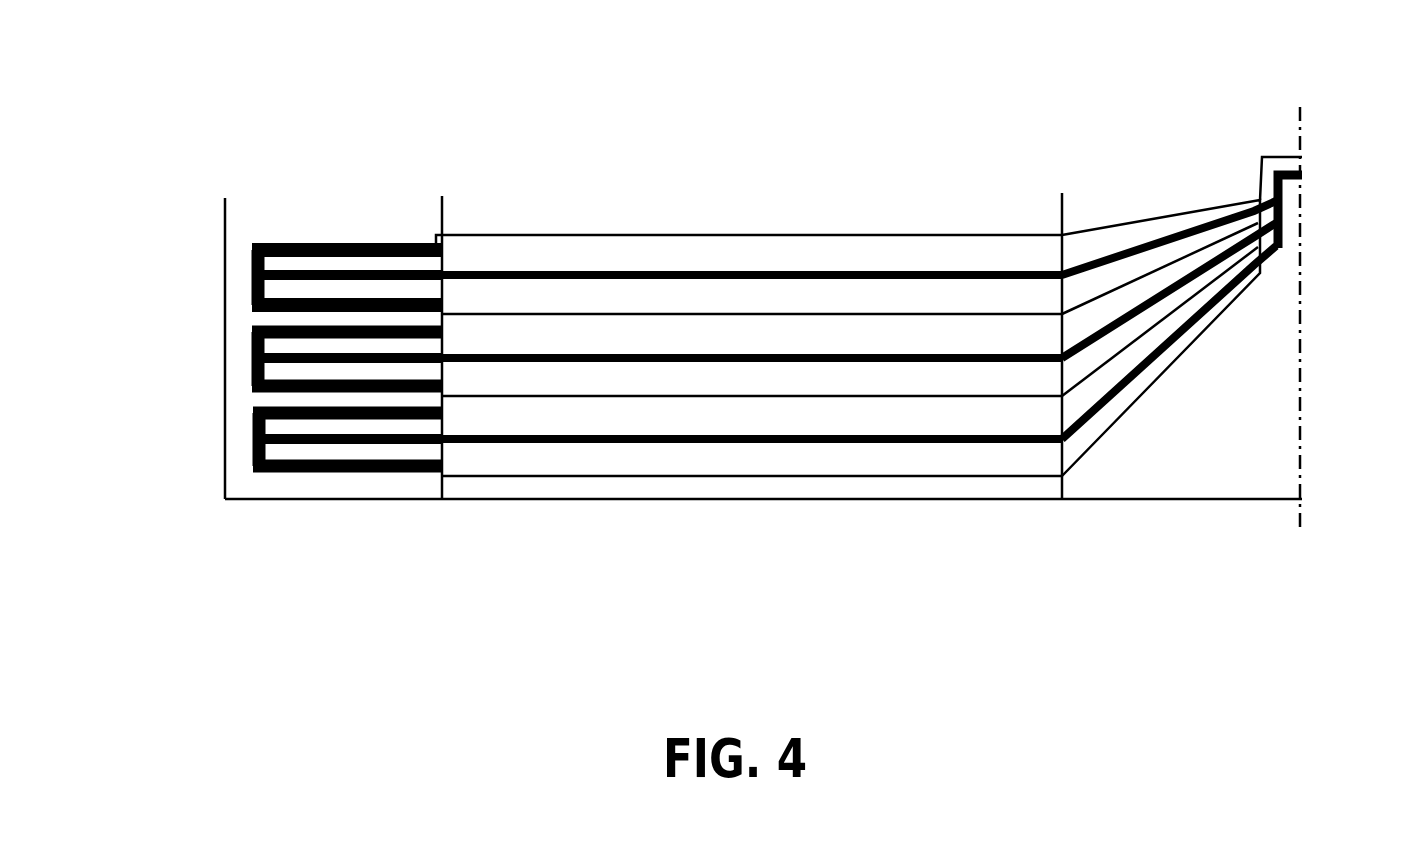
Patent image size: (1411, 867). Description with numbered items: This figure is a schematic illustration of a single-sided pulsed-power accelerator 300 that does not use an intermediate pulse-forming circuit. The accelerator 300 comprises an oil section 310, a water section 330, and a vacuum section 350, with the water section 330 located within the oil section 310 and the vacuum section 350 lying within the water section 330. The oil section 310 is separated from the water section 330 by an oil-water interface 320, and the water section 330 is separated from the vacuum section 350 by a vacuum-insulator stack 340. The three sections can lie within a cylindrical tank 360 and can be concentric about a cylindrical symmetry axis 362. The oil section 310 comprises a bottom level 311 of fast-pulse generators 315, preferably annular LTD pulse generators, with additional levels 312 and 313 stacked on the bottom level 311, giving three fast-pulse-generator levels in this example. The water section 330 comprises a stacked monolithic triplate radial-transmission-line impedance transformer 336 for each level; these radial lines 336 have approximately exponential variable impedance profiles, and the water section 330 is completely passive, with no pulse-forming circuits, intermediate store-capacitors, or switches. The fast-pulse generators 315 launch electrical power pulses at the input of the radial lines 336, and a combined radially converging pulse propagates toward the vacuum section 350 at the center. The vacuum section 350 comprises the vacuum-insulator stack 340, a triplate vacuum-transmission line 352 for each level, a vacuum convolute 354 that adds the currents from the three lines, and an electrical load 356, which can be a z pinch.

The pulsed-power accelerator 300 is at (474, 53).
The oil section 310 is at (257, 401).
The level of fast-pulse generators 311 is at (204, 439).
The additional level 312 is at (204, 362).
The additional level 313 is at (257, 248).
The fast-pulse generator 315 is at (360, 238).
The oil-water interface 320 is at (440, 198).
The water section 330 is at (749, 389).
The triplate radial-transmission-line impedance transformer 336 is at (718, 250).
The vacuum-insulator stack 340 is at (1058, 193).
The vacuum section 350 is at (1227, 337).
The triplate vacuum-transmission line 352 is at (1160, 228).
The vacuum convolute 354 is at (1270, 153).
The electrical load 356 is at (1311, 153).
The cylindrical tank 360 is at (223, 199).
The cylindrical symmetry axis 362 is at (1301, 297).